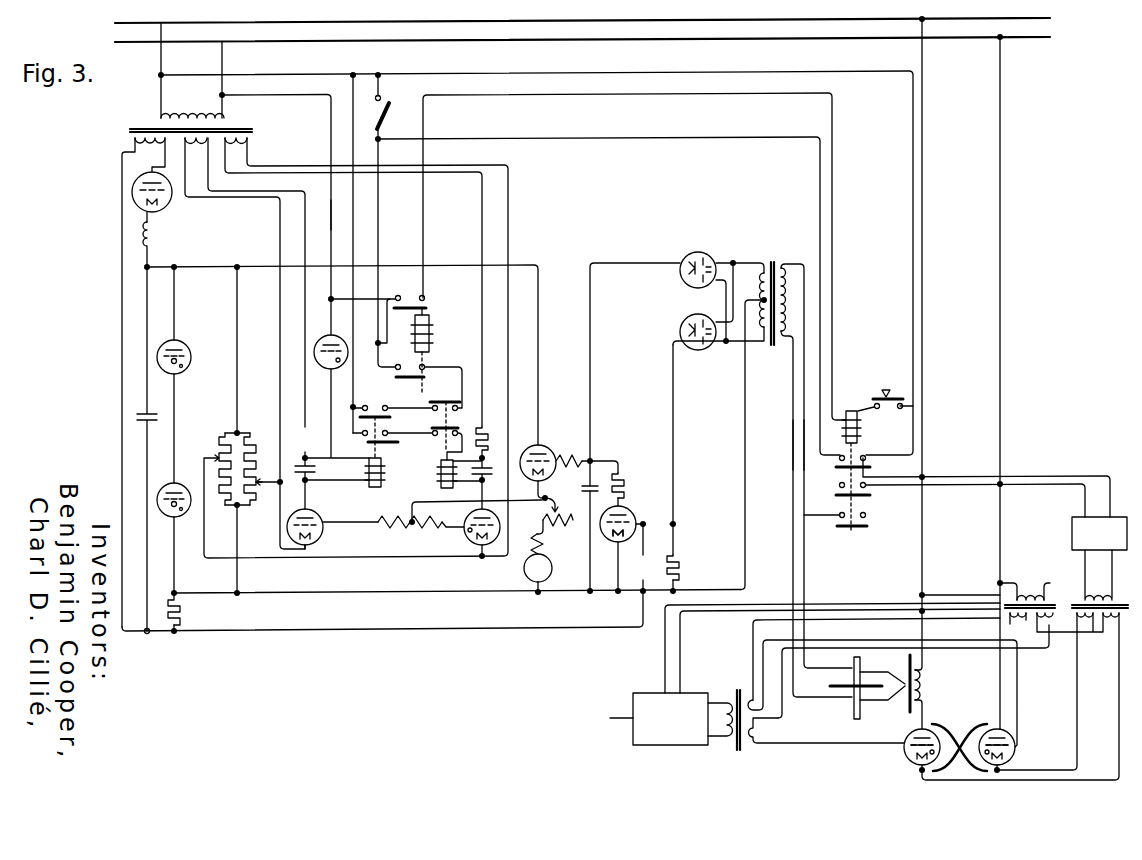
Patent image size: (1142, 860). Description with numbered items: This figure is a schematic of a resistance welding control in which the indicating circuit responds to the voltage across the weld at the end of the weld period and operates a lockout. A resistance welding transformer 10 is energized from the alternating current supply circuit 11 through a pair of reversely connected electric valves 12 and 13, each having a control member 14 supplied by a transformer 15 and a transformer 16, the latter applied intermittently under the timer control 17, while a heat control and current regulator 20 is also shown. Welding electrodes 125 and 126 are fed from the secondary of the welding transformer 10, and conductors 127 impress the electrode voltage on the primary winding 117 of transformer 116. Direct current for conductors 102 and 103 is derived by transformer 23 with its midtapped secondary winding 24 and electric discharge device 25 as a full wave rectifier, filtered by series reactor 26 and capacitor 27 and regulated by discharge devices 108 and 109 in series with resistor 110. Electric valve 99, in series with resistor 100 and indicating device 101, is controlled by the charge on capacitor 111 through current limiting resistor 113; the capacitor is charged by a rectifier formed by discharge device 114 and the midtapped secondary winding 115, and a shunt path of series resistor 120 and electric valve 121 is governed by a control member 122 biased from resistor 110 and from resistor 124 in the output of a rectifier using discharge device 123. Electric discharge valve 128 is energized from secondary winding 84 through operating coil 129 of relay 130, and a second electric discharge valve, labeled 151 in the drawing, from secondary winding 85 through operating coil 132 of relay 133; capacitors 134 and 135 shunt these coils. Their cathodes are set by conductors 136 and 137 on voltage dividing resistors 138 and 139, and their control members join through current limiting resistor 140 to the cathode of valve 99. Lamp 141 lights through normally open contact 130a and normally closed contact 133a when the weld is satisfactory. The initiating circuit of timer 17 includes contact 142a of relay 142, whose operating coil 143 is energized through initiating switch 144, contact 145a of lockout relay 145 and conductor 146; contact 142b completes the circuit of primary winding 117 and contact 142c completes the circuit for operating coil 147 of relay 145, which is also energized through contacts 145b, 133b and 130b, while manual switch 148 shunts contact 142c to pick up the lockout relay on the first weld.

The alternating current supply circuit 11 is at (501, 43).
The transformer 23 is at (256, 124).
The midtapped secondary winding 24 is at (133, 143).
The secondary winding 84 is at (198, 149).
The secondary winding 85 is at (237, 149).
The electric discharge device 25 is at (163, 208).
The series reactor 26 is at (154, 237).
The manual switch 148 is at (384, 110).
The conductor 146 is at (330, 217).
The conductor 102 is at (254, 269).
The regulating discharge device 108 is at (189, 354).
The parallel capacitor 27 is at (158, 422).
The regulating discharge device 109 is at (166, 517).
The resistor 110 is at (181, 615).
The conductor 103 is at (309, 594).
The voltage dividing resistor 139 is at (221, 450).
The voltage dividing resistor 138 is at (258, 446).
The conductor 137 is at (205, 507).
The conductor 136 is at (272, 487).
The capacitor 134 is at (298, 474).
The operating coil 129 is at (368, 464).
The relay 130 is at (382, 459).
The electric discharge valve 128 is at (320, 512).
The normally open contact 130b is at (388, 406).
The normally open contact 130a is at (382, 441).
The normally closed contact 133b is at (432, 411).
The normally closed contact 133a is at (433, 436).
The relay 133 is at (441, 466).
The operating coil 132 is at (441, 482).
The capacitor 135 is at (496, 474).
The lamp 141 is at (323, 338).
The normally open contact 145a is at (426, 300).
The operating coil 147 is at (430, 330).
The normally open contact 145b is at (426, 366).
The lockout relay 145 is at (404, 364).
The current limiting resistor 140 is at (412, 527).
The tube 151 is at (465, 514).
The electric valve 99 is at (542, 448).
The resistor 100 is at (550, 514).
The indicating device 101 is at (546, 558).
The current limiting resistor 113 is at (563, 467).
The capacitor 111 is at (594, 484).
The series resistor 120 is at (628, 474).
The control member 122 is at (630, 514).
The electric valve 121 is at (607, 547).
The resistor 124 is at (681, 562).
The electric discharge device 114 is at (698, 252).
The discharge device 123 is at (698, 350).
The transformer 116 is at (784, 255).
The midtapped secondary winding 115 is at (760, 343).
The primary winding 117 is at (783, 337).
The initiating switch 144 is at (885, 389).
The operating coil 143 is at (862, 422).
The relay 142 is at (856, 452).
The contact 142c is at (866, 461).
The normally open contact 142a is at (841, 485).
The normally open contact 142b is at (866, 516).
The conductors 127 is at (793, 455).
The timer control 17 is at (1072, 533).
The transformer 15 is at (1062, 603).
The transformer 16 is at (1129, 603).
The resistance welding transformer 10 is at (912, 653).
The welding electrode 125 is at (853, 666).
The welding electrode 126 is at (860, 706).
The electric valve 12 is at (908, 760).
The electric valve 13 is at (1013, 757).
The control member 14 is at (907, 731).
The heat control and current regulator 20 is at (646, 719).